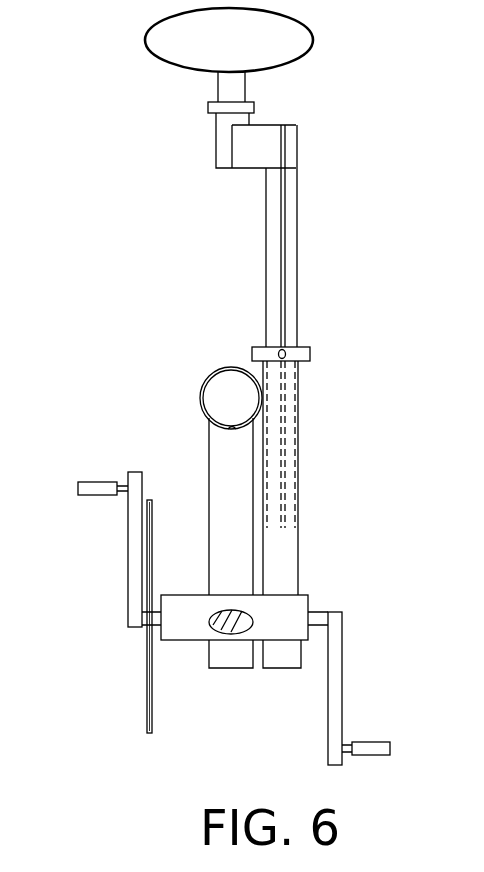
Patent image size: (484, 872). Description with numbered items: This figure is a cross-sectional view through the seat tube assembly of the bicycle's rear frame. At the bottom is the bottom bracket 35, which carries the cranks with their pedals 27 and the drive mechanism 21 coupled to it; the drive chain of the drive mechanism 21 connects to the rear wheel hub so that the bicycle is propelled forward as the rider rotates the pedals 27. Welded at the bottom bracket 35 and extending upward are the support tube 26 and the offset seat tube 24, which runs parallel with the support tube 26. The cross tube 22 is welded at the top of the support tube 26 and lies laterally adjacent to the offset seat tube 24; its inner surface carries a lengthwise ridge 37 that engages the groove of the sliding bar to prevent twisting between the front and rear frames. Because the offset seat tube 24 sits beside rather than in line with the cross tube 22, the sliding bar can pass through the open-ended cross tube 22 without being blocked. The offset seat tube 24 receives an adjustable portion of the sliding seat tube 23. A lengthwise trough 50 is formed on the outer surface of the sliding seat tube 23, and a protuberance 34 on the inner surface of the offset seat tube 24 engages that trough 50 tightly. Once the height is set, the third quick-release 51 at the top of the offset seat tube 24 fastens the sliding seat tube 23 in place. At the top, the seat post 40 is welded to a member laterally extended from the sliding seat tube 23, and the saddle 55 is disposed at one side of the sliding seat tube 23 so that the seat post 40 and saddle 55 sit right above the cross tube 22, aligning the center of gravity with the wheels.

The drive mechanism 21 is at (150, 700).
The cross tube 22 is at (201, 388).
The sliding seat tube 23 is at (292, 182).
The offset seat tube 24 is at (296, 553).
The support tube 26 is at (240, 482).
The pedals 27 is at (92, 493).
The protuberance 34 is at (306, 350).
The bottom bracket 35 is at (195, 638).
The lengthwise ridge 37 is at (230, 428).
The seat post 40 is at (217, 127).
The lengthwise trough 50 is at (278, 222).
The third quick-release 51 is at (288, 356).
The saddle 55 is at (158, 54).